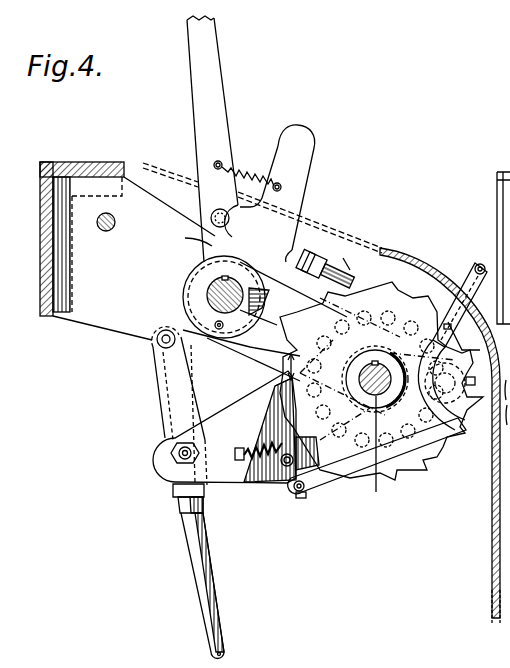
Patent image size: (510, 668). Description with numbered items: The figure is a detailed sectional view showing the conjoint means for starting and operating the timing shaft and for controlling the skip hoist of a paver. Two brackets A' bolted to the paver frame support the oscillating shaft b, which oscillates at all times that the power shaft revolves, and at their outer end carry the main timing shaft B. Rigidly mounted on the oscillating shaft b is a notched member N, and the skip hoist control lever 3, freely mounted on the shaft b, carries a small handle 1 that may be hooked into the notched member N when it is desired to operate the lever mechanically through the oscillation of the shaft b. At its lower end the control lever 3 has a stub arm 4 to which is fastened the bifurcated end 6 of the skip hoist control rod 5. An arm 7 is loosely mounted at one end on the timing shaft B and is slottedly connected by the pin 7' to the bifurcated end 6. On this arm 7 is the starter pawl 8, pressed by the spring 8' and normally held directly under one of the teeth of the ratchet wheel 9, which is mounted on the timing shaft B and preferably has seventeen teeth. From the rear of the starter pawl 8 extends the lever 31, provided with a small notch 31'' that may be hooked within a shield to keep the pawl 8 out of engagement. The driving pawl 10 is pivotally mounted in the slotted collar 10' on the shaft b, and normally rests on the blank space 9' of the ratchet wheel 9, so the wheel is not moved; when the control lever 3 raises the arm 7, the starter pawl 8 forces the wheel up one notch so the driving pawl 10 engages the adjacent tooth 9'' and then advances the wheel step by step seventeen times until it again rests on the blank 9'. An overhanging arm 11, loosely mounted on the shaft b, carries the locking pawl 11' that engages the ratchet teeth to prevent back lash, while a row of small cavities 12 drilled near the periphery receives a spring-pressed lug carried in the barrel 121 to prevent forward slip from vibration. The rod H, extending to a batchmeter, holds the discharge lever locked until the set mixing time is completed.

The small handle 1 is at (296, 164).
The skip hoist control lever 3 is at (208, 93).
The stub arm 4 is at (190, 312).
The skip hoist control rod 5 is at (214, 614).
The bifurcated end 6 is at (162, 398).
The arm 7 is at (236, 444).
The pin 7' is at (157, 449).
The starter pawl 8 is at (271, 390).
The spring 8' is at (258, 435).
The ratchet wheel 9 is at (381, 387).
The blank space 9' is at (301, 329).
The adjacent tooth 9'' is at (281, 363).
The driving pawl 10 is at (260, 315).
The slotted collar 10' is at (196, 287).
The overhanging arm 11 is at (326, 264).
The locking pawl 11' is at (355, 263).
The small cavities 12 is at (371, 318).
The lever 31 is at (457, 346).
The small notch 31'' is at (472, 341).
The barrel 121 is at (472, 386).
The brackets A' is at (127, 254).
The main timing shaft B is at (377, 403).
The rod H is at (106, 232).
The notched member N is at (188, 236).
The oscillating shaft b is at (206, 291).